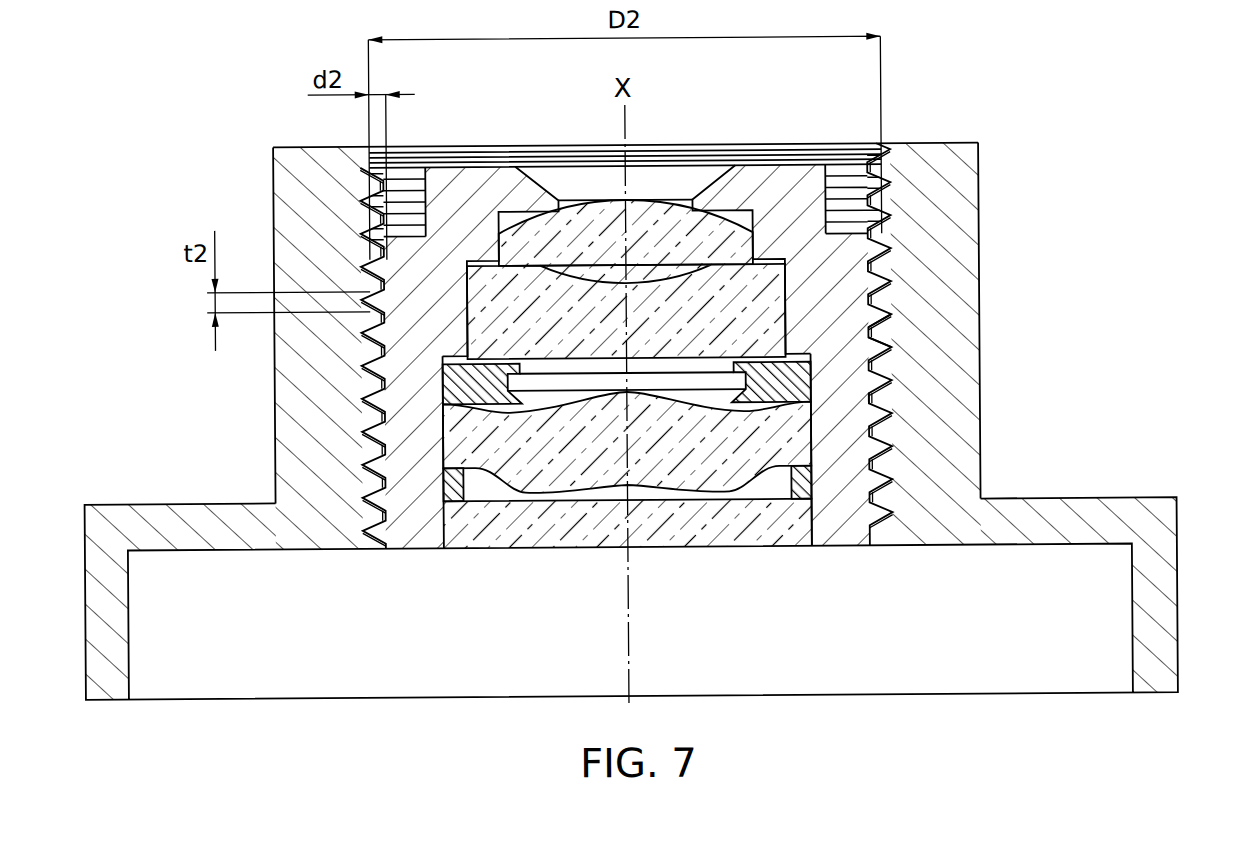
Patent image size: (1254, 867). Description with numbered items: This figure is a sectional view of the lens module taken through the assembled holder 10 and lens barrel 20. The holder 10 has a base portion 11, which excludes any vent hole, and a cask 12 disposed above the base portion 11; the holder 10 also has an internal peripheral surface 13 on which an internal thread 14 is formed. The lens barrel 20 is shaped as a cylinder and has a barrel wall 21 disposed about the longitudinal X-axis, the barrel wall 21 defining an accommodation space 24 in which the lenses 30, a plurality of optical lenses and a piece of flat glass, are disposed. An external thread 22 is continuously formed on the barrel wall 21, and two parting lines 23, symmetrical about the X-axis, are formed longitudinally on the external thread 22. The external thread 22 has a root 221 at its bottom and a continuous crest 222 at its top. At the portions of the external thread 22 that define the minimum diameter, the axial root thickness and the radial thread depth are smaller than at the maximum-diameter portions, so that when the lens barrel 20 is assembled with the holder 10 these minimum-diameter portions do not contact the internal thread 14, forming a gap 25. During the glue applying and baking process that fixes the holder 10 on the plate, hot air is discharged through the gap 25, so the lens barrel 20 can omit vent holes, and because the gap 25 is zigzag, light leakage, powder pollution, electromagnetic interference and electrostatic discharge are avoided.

The holder 10 is at (982, 209).
The base portion 11 is at (1157, 618).
The cask 12 is at (940, 147).
The internal peripheral surface 13 is at (886, 205).
The internal thread 14 is at (868, 265).
The lens barrel 20 is at (720, 401).
The barrel wall 21 is at (468, 172).
The external thread 22 is at (873, 298).
The root 221 is at (884, 345).
The continuous crest 222 is at (872, 322).
The parting lines 23 is at (390, 338).
The accommodation space 24 is at (604, 270).
The gap 25 is at (872, 397).
The lenses 30 is at (668, 212).